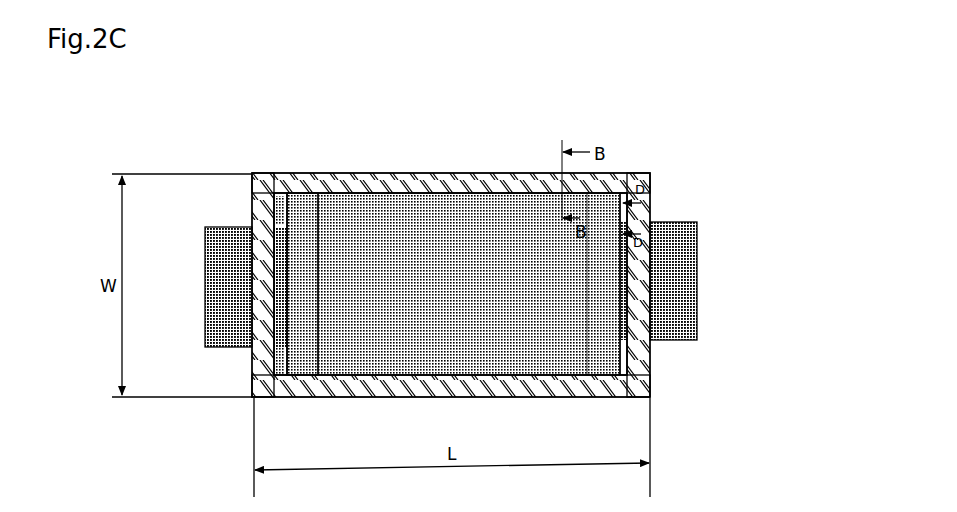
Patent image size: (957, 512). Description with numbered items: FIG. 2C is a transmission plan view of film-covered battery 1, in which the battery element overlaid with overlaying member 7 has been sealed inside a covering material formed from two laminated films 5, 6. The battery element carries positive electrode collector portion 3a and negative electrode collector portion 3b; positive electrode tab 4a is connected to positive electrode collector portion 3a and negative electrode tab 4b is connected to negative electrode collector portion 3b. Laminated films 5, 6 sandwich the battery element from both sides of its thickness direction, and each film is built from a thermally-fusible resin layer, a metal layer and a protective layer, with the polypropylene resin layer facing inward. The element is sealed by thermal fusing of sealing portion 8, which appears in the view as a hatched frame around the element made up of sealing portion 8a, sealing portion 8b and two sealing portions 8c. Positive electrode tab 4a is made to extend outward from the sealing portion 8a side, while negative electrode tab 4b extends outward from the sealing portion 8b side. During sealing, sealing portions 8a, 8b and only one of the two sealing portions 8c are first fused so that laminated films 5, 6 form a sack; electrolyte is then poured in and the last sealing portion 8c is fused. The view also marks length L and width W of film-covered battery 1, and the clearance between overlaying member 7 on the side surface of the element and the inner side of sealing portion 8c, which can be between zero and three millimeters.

The film-covered battery 1 is at (792, 218).
The positive electrode collector portion 3a is at (606, 395).
The negative electrode collector portion 3b is at (300, 367).
The positive electrode tab 4a is at (698, 256).
The negative electrode tab 4b is at (208, 302).
The laminated film 5 is at (622, 176).
The laminated film 6 is at (453, 284).
The overlaying member 7 is at (280, 194).
The sealing portion 8 is at (646, 380).
The sealing portion 8a is at (650, 207).
The sealing portion 8b is at (254, 193).
The sealing portion 8c is at (417, 173).